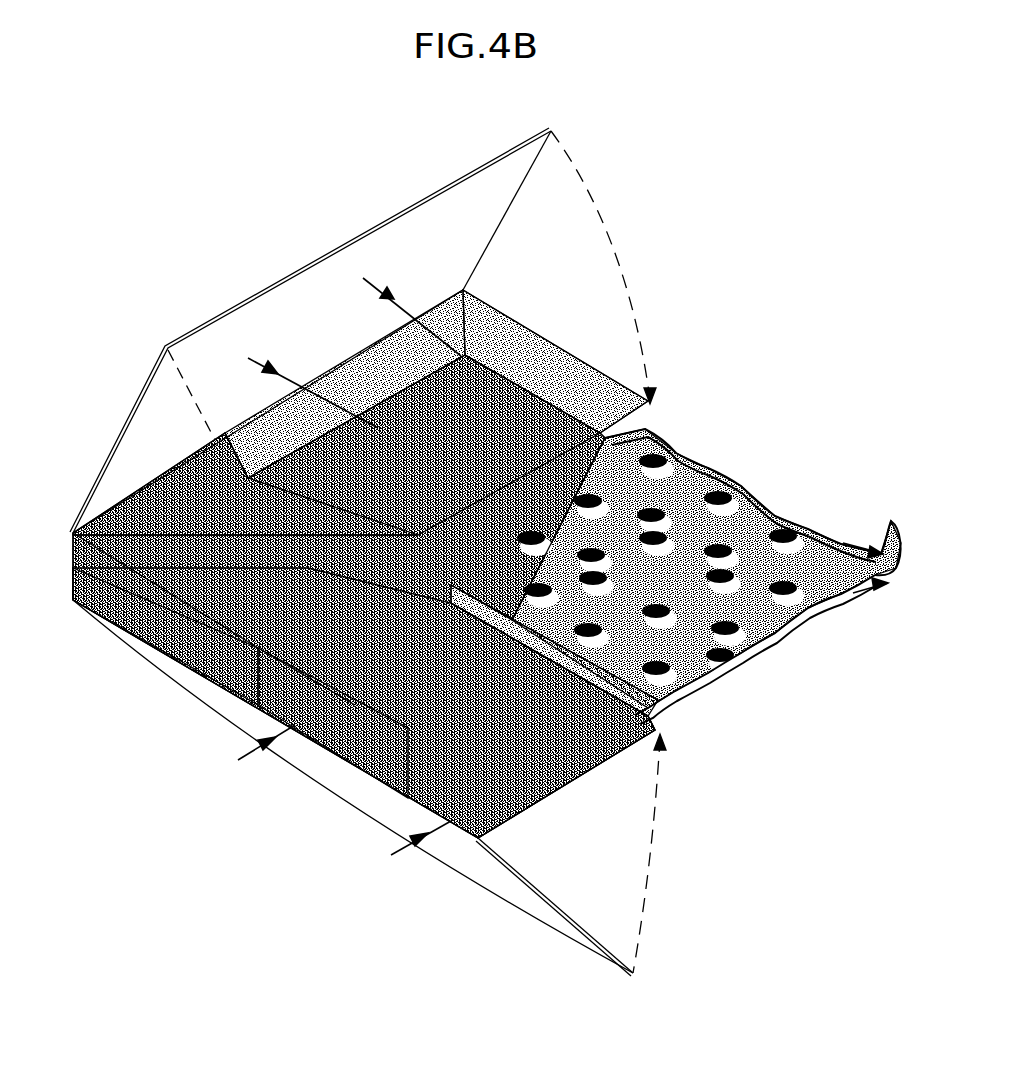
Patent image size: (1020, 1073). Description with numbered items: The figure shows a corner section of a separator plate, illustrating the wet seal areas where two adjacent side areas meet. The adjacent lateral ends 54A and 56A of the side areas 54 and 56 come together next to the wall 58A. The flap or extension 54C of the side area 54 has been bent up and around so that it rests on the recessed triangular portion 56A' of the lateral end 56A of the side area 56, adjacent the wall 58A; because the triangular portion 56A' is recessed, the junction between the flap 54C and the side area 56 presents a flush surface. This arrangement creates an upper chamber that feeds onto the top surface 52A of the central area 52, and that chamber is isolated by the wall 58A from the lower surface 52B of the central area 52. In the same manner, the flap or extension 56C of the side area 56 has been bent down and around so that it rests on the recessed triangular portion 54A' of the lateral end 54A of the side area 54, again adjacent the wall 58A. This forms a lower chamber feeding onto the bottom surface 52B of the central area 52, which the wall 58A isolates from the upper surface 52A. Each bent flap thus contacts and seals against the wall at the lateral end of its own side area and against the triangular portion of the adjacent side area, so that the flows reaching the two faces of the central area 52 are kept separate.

The central area 52 is at (706, 568).
The top surface 52A is at (700, 463).
The bottom surface 52B is at (822, 520).
The side area 54 is at (384, 557).
The lateral end 54A is at (320, 379).
The recessed triangular portion 54A' is at (336, 449).
The flap 54C is at (503, 313).
The side area 56 is at (389, 737).
The lateral end 56A is at (278, 723).
The recessed triangular portion 56A' is at (165, 651).
The flap 56C is at (450, 820).
The wall 58A is at (130, 635).